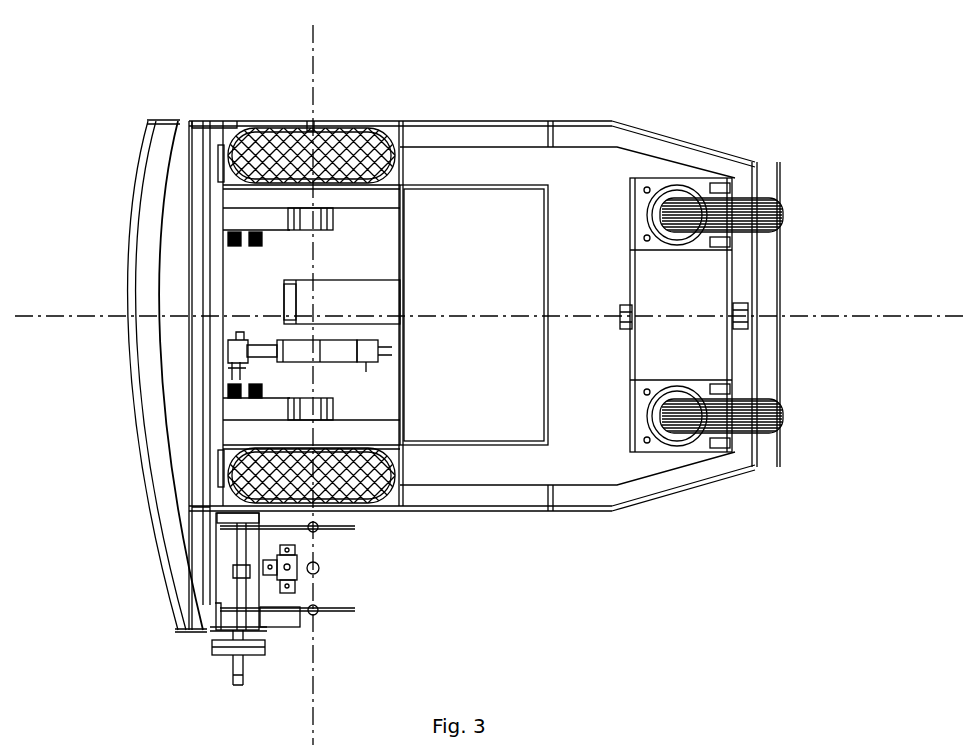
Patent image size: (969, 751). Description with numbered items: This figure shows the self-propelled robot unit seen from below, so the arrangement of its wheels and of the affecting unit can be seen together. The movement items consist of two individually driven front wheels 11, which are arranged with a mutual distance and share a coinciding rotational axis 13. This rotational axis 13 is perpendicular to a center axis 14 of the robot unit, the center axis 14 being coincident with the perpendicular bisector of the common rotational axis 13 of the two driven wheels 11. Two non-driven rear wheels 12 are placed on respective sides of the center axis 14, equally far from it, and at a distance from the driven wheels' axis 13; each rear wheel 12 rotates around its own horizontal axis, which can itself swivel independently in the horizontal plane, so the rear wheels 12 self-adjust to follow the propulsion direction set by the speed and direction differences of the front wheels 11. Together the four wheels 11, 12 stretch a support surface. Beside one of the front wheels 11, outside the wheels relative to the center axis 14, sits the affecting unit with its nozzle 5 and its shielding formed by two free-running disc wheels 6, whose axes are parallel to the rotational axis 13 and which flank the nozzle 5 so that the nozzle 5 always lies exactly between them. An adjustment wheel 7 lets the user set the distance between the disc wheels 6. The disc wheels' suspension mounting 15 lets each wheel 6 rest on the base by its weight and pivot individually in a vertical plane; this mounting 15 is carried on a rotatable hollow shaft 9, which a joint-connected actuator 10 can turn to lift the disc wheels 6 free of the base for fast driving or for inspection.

The nozzle 5 is at (320, 568).
The disc wheels 6 is at (355, 527).
The adjustment wheel 7 is at (228, 650).
The hollow shaft 9 is at (233, 377).
The actuator 10 is at (353, 357).
The front wheels 11 is at (248, 155).
The rear wheels 12 is at (784, 214).
The rotational axis 13 is at (313, 44).
The center axis 14 is at (30, 316).
The suspension mounting 15 is at (272, 612).